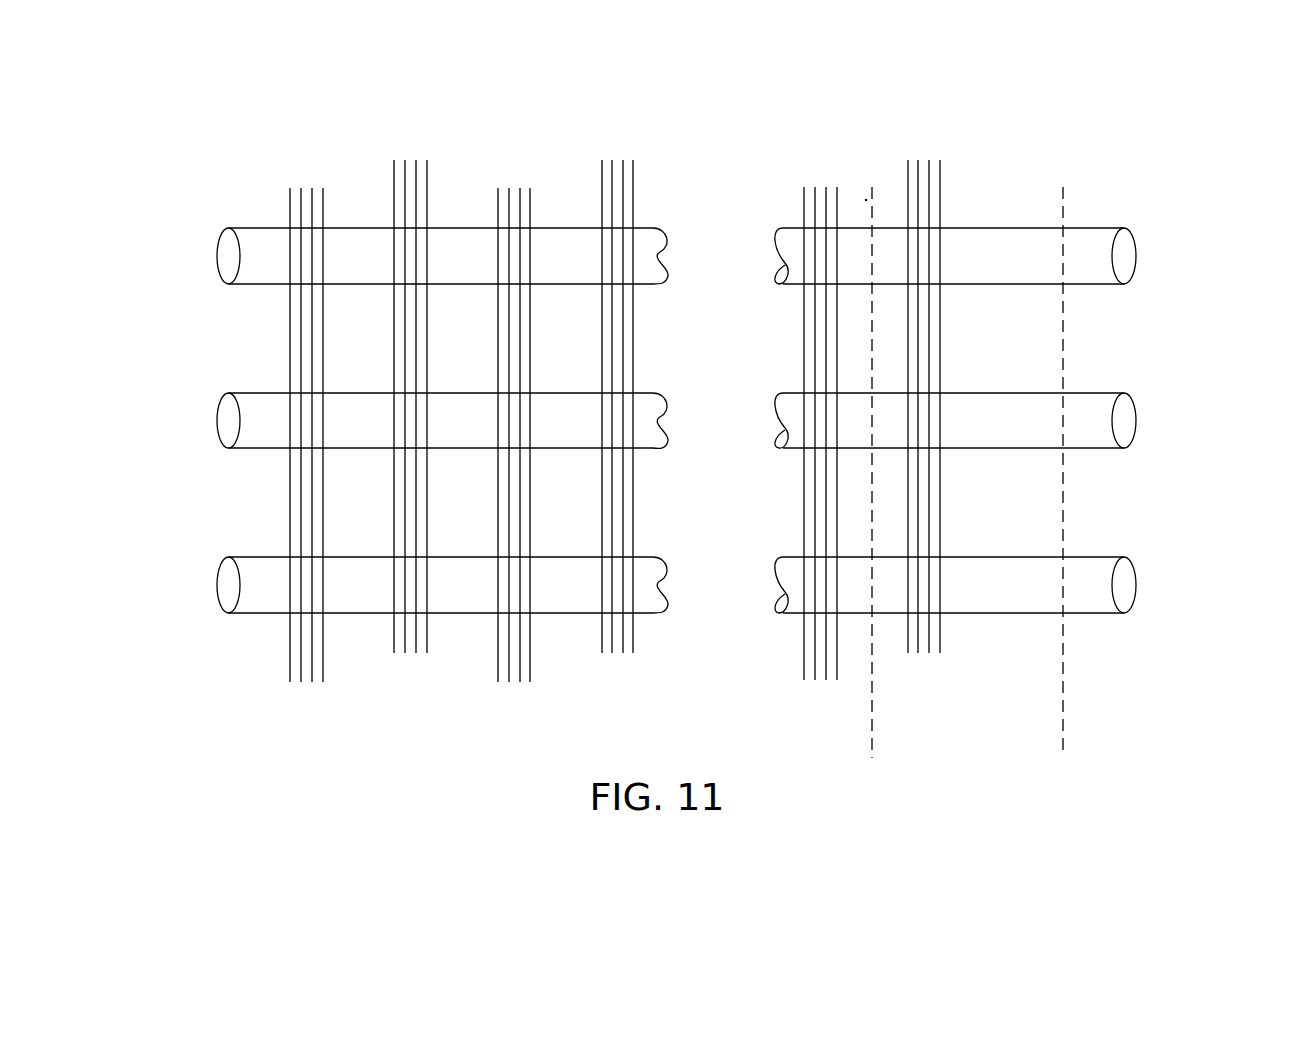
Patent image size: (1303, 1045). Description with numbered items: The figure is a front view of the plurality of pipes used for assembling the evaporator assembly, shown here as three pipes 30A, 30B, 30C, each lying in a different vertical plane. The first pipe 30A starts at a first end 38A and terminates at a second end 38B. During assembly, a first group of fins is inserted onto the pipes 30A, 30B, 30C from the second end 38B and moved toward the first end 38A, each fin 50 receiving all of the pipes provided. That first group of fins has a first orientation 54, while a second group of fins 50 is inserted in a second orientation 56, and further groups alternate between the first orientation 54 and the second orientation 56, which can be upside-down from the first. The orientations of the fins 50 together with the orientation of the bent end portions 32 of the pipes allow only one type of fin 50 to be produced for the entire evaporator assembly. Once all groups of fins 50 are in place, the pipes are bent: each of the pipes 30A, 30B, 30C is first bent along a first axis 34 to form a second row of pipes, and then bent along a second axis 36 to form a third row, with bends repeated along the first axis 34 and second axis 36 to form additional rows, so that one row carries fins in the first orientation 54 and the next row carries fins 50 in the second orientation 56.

The first pipe 30A is at (1020, 243).
The second pipe 30B is at (1148, 424).
The third pipe 30C is at (1149, 588).
The bent end portions 32 is at (358, 285).
The first axis 34 is at (878, 723).
The second axis 36 is at (1068, 721).
The first end 38A is at (1128, 236).
The second end 38B is at (220, 253).
The fin 50 is at (820, 177).
The first orientation 54 is at (406, 666).
The second orientation 56 is at (298, 696).